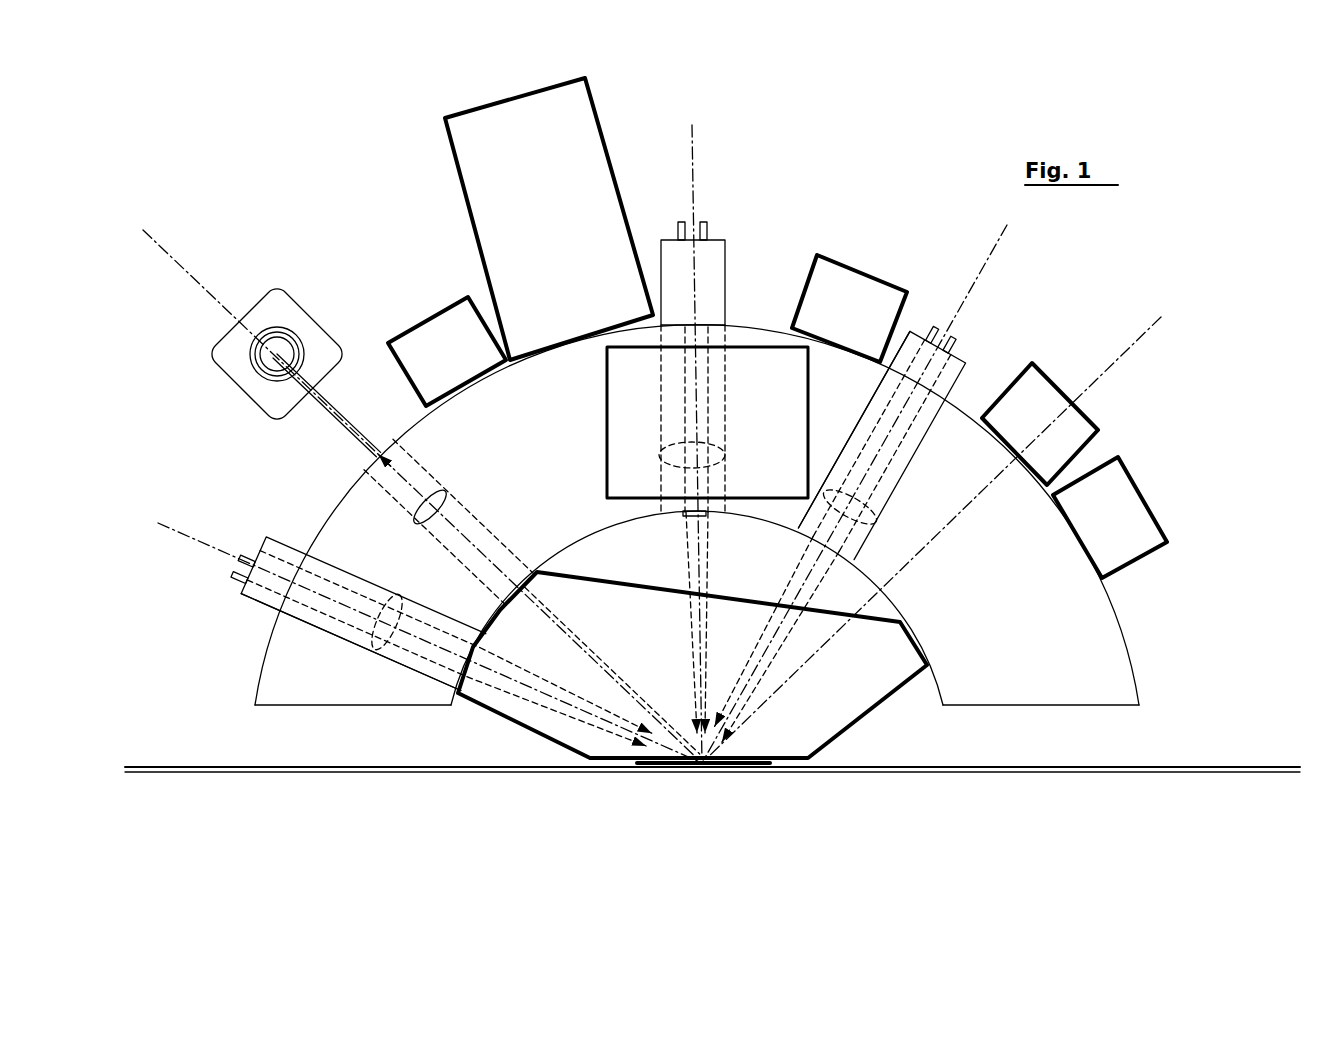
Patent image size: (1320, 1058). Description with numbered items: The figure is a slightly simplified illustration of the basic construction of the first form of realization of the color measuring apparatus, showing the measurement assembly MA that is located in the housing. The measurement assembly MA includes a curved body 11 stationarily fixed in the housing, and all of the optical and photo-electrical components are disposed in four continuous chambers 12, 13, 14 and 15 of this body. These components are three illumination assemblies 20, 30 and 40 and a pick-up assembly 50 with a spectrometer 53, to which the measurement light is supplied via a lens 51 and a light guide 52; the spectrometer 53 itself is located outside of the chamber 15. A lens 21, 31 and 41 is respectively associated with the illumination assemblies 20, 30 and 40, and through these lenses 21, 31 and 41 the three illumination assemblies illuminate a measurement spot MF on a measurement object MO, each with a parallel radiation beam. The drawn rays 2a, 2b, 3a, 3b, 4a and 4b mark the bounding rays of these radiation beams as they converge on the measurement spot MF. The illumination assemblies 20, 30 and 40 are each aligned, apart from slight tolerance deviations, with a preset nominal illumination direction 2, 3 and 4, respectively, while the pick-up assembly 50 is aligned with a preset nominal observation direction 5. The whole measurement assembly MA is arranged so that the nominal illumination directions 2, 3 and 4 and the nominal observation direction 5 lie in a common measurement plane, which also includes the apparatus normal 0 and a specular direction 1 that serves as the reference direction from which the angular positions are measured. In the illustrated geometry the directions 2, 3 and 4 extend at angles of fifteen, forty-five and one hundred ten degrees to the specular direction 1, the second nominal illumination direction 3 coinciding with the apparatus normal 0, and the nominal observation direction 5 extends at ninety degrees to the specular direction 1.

The measurement assembly MA is at (445, 298).
The measurement object MO is at (225, 775).
The measurement spot MF is at (703, 763).
The apparatus normal 0 is at (690, 143).
The specular direction 1 is at (1118, 363).
The nominal illumination direction 2 is at (990, 258).
The nominal illumination direction 3 is at (693, 167).
The nominal illumination direction 4 is at (193, 538).
The nominal observation direction 5 is at (537, 602).
The curved body 11 is at (1112, 628).
The chamber 12 is at (867, 418).
The chamber 13 is at (670, 362).
The chamber 14 is at (343, 630).
The chamber 15 is at (420, 470).
The illumination assembly 20 is at (898, 338).
The lens 21 is at (870, 515).
The illumination assembly 30 is at (655, 262).
The lens 31 is at (677, 453).
The illumination assembly 40 is at (255, 602).
The lens 41 is at (393, 602).
The pick-up assembly 50 is at (232, 388).
The lens 51 is at (440, 497).
The light guide 52 is at (345, 410).
The spectrometer 53 is at (317, 327).
The beam boundary ray 2a is at (827, 573).
The beam boundary ray 2b is at (795, 582).
The beam boundary ray 3a is at (708, 588).
The beam boundary ray 3b is at (682, 593).
The beam boundary ray 4a is at (550, 683).
The beam boundary ray 4b is at (542, 708).